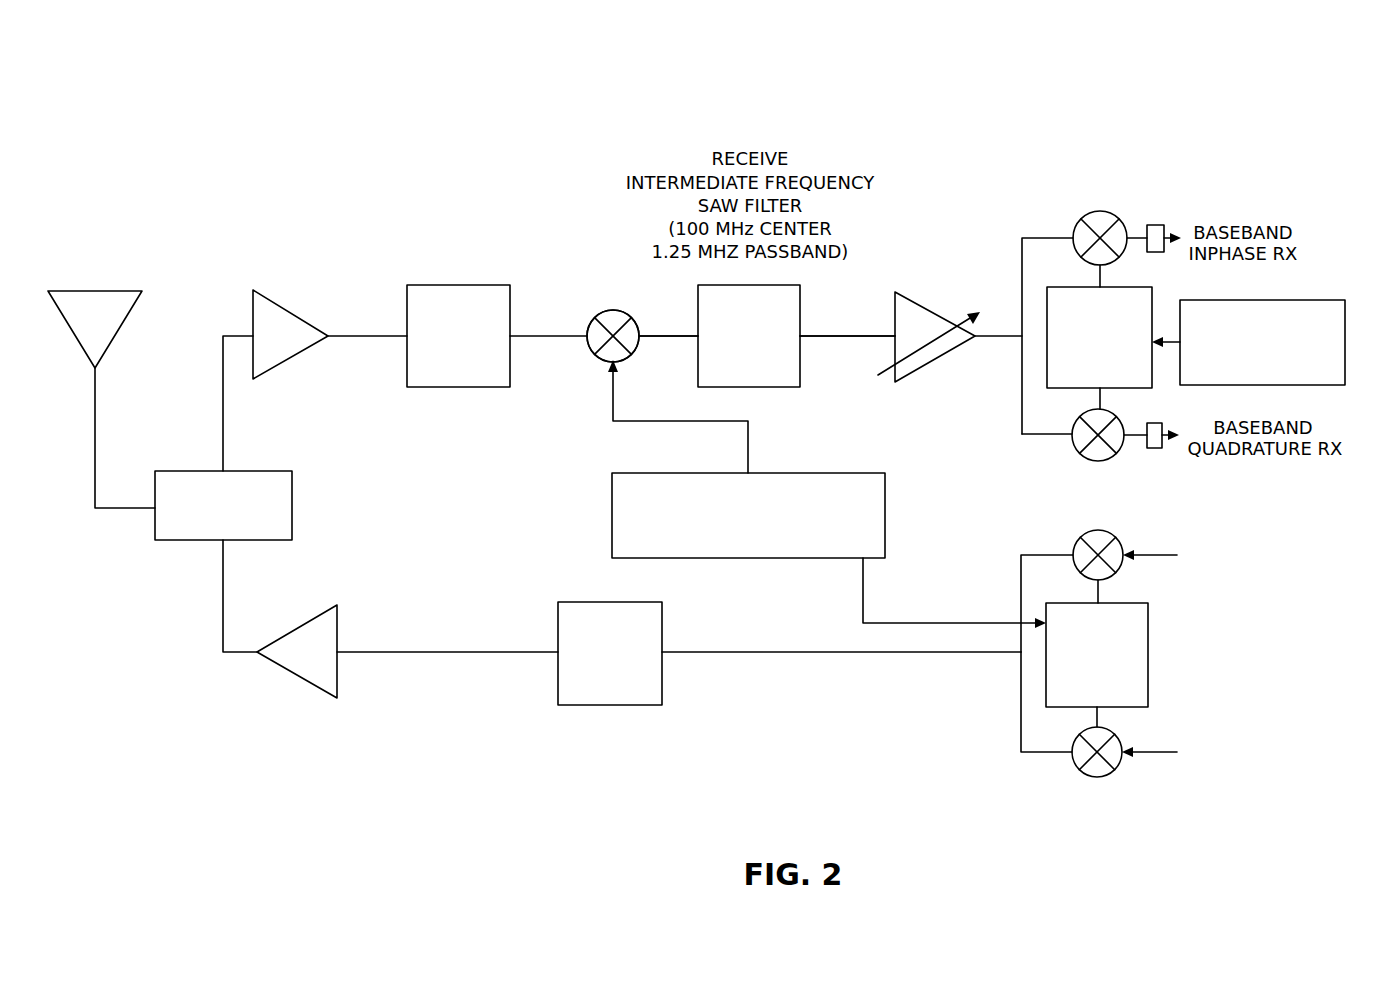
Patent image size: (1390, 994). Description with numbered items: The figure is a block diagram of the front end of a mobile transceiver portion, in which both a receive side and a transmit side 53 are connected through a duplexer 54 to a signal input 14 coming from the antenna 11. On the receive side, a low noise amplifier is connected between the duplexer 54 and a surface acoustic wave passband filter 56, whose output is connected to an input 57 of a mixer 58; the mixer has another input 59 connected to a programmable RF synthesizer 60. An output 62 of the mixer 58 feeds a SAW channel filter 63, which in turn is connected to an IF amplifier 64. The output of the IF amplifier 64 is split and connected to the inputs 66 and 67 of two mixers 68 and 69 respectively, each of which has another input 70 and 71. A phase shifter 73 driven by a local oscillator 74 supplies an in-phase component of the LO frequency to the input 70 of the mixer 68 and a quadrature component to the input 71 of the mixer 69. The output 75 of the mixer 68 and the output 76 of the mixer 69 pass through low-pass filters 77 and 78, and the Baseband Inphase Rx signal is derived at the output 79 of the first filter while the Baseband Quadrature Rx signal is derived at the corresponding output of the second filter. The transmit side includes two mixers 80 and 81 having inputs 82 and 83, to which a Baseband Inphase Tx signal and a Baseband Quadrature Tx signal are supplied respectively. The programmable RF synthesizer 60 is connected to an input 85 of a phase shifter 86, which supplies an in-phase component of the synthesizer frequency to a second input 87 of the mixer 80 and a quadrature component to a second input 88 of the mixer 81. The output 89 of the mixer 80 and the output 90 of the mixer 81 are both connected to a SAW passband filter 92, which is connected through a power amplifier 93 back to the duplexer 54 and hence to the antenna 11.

The antenna 11 is at (110, 322).
The signal input 14 is at (131, 438).
The transmit side 53 is at (306, 306).
The duplexer 54 is at (263, 505).
The surface acoustic wave passband filter 56 is at (457, 323).
The input of mixer 57 is at (606, 296).
The mixer 58 is at (615, 296).
The input of mixer 59 is at (678, 416).
The programmable RF synthesizer 60 is at (687, 516).
The output of mixer 62 is at (668, 301).
The SAW channel filter 63 is at (847, 305).
The IF amplifier 64 is at (925, 320).
The input of mixer 66 is at (1039, 295).
The input of mixer 67 is at (1054, 448).
The mixer 68 is at (1113, 190).
The mixer 69 is at (1022, 425).
The input of mixer 70 is at (1071, 266).
The input of mixer 71 is at (1079, 401).
The phase shifter 73 is at (1154, 325).
The local oscillator 74 is at (1248, 323).
The output of mixer 75 is at (1157, 262).
The output of mixer 76 is at (1160, 415).
The low-pass filter 77 is at (1230, 201).
The low-pass filter 78 is at (1263, 466).
The output 79 is at (1227, 337).
The mixer 80 is at (1123, 541).
The mixer 81 is at (1136, 784).
The input of mixer 82 is at (1209, 574).
The input of mixer 83 is at (1228, 733).
The input of phase shifter 85 is at (954, 593).
The phase shifter 86 is at (1139, 655).
The second input of mixer 87 is at (1077, 580).
The second input of mixer 88 is at (1073, 723).
The output of mixer 89 is at (1007, 589).
The output of mixer 90 is at (1040, 721).
The SAW passband filter 92 is at (578, 698).
The power amplifier 93 is at (285, 649).